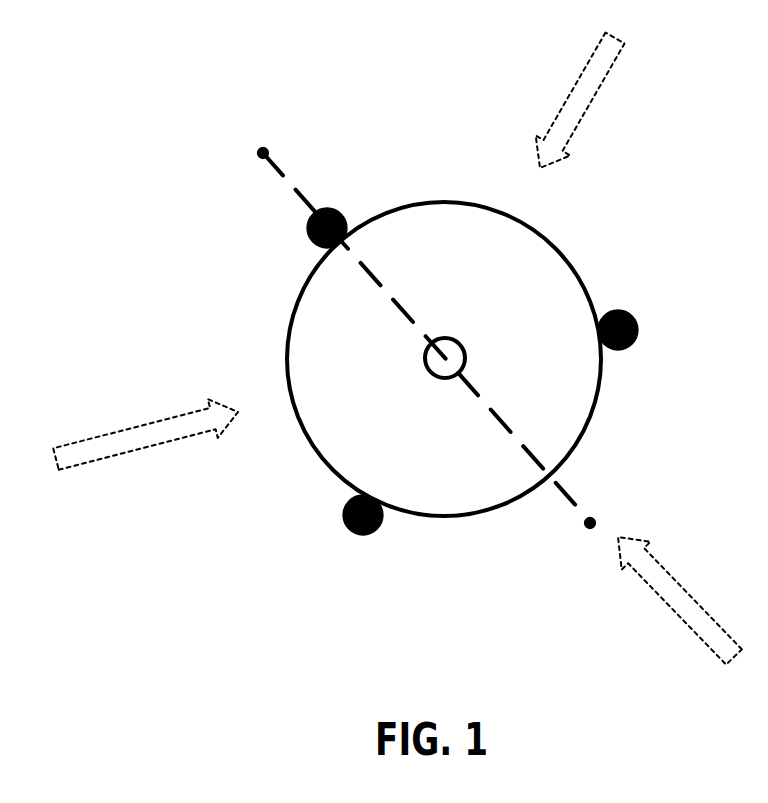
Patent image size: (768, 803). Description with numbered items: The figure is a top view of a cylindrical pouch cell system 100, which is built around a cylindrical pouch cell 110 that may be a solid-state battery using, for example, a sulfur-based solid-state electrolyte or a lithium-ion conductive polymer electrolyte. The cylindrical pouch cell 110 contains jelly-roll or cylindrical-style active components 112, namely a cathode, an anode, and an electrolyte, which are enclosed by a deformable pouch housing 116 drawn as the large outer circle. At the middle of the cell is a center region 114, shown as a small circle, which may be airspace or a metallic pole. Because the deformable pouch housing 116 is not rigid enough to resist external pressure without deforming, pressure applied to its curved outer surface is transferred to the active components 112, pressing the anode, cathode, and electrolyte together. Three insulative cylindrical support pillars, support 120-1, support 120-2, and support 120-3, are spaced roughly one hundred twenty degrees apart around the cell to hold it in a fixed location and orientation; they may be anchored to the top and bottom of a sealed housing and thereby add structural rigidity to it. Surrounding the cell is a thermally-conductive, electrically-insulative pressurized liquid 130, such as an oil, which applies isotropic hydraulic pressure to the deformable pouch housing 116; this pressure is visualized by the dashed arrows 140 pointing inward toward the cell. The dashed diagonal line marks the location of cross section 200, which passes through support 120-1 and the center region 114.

The cylindrical pouch cell system 100 is at (188, 128).
The cylindrical pouch cell 110 is at (548, 524).
The active components 112 is at (487, 480).
The center region 114 is at (433, 336).
The deformable pouch housing 116 is at (413, 202).
The support 120-1 is at (327, 208).
The support 120-2 is at (620, 311).
The support 120-3 is at (385, 533).
The pressurized liquid 130 is at (230, 258).
The arrows 140 is at (547, 138).
The cross section 200 is at (263, 150).